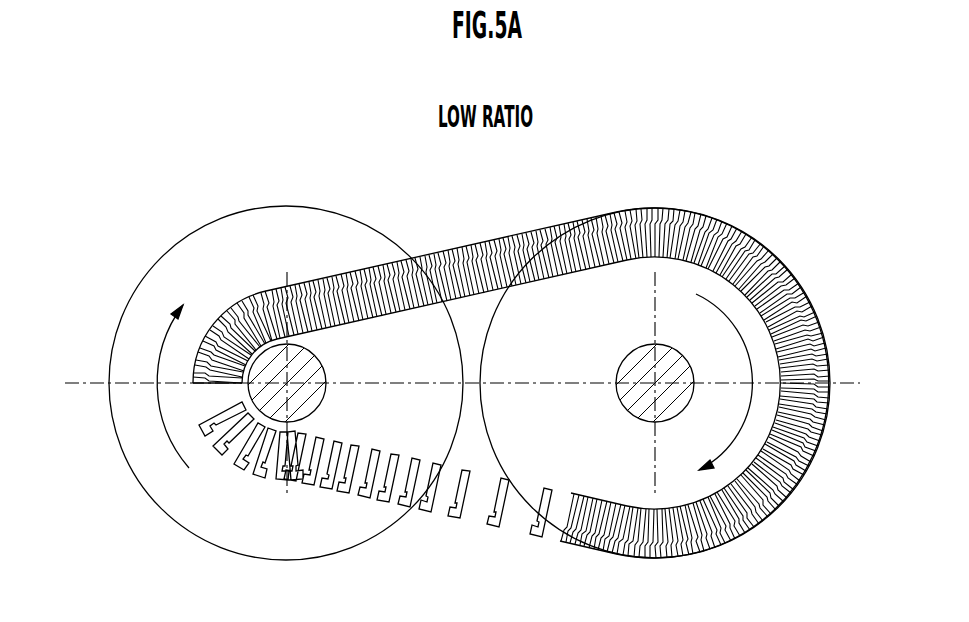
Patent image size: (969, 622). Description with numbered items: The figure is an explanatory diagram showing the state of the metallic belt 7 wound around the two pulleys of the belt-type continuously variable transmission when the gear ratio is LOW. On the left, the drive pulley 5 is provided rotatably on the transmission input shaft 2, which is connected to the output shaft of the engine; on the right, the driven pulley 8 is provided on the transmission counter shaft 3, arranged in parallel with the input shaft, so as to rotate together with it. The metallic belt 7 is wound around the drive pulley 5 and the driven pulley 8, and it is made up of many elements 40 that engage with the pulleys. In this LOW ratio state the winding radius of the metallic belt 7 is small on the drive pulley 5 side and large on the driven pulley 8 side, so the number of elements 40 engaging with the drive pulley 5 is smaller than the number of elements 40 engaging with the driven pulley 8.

The drive pulley 5 is at (223, 252).
The transmission input shaft 2 is at (318, 404).
The driven pulley 8 is at (676, 280).
The transmission counter shaft 3 is at (633, 362).
The metallic belt 7 is at (482, 243).
The element 40 is at (418, 312).